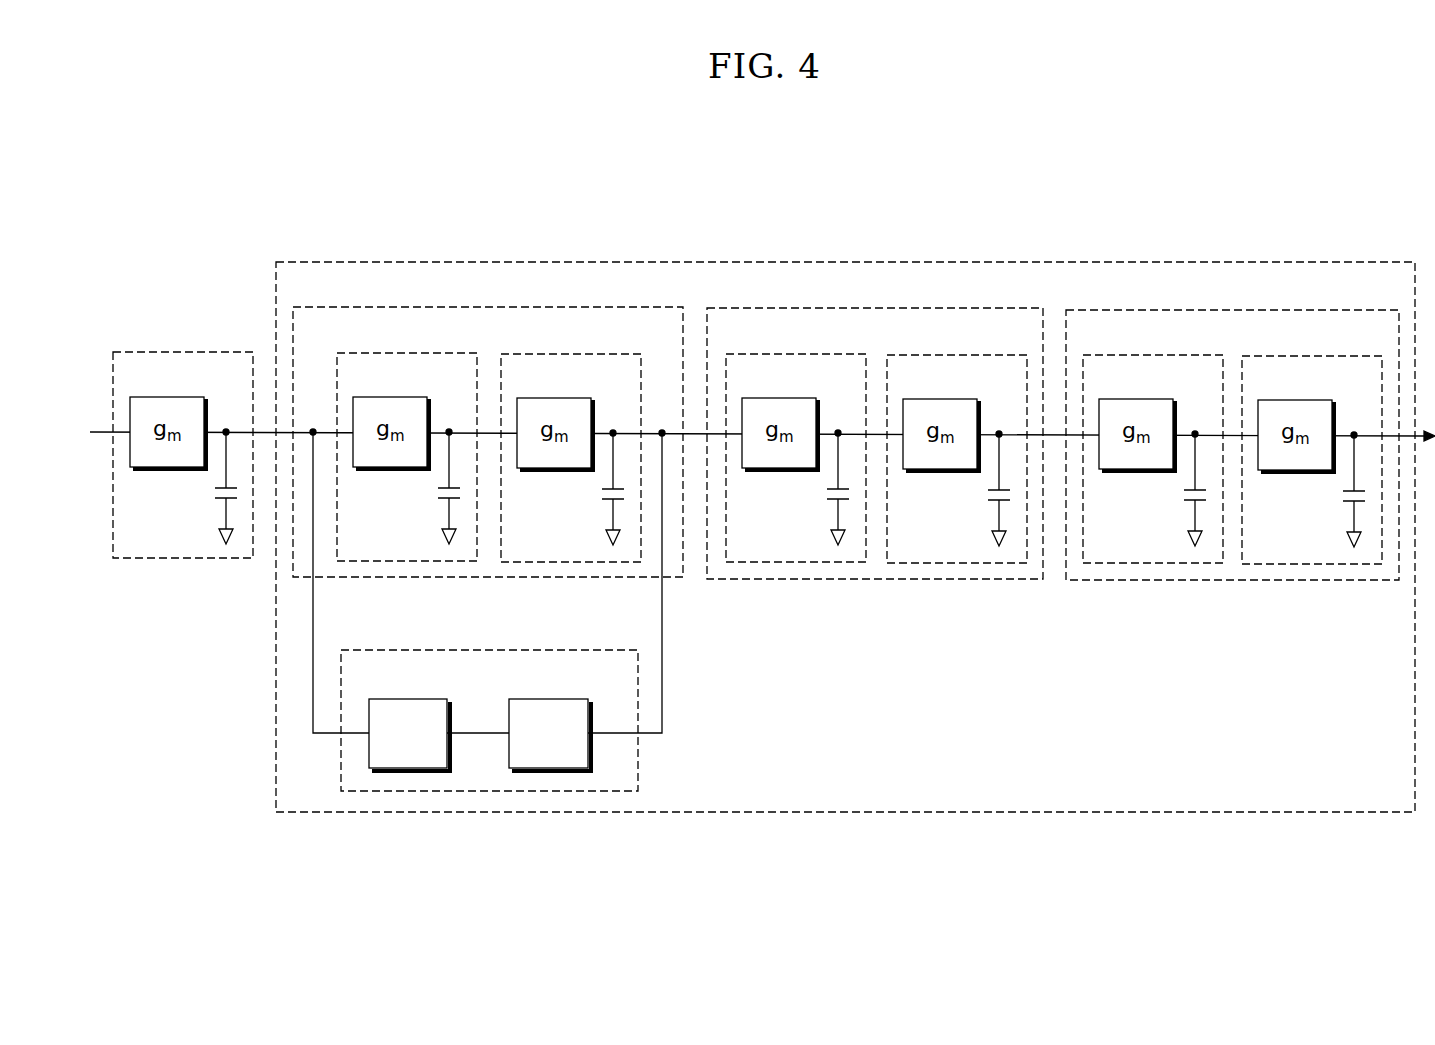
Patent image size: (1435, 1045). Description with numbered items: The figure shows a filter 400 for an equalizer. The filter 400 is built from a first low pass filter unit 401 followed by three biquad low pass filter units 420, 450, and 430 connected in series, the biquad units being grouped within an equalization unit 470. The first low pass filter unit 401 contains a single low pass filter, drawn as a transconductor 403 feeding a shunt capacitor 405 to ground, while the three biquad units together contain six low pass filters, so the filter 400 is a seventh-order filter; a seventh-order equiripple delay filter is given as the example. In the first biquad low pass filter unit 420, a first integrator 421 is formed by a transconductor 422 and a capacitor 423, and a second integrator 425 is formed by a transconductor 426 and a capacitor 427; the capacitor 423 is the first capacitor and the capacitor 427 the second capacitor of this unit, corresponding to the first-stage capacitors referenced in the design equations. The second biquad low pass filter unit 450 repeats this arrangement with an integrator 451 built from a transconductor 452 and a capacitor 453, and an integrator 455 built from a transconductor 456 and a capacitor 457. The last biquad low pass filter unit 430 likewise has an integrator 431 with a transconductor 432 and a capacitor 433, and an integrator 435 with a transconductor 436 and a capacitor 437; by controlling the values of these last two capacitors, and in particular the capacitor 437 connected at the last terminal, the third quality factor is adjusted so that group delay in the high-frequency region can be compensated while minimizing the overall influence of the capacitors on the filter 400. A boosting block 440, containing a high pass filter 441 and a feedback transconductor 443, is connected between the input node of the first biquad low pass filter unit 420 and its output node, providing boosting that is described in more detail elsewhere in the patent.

The filter 400 is at (1227, 215).
The first low pass filter unit 401 is at (183, 439).
The transconductor 403 is at (181, 419).
The capacitor C1 405 is at (186, 487).
The equalization unit 470 is at (877, 263).
The first biquad low pass filter unit 420 is at (490, 307).
The first integrator 421 is at (407, 442).
The transconductor 422 is at (404, 419).
The capacitor 423 is at (409, 487).
The second integrator 425 is at (571, 443).
The transconductor 426 is at (568, 420).
The capacitor 427 is at (573, 488).
The biquad low pass filter unit 450 is at (880, 308).
The integrator 451 is at (796, 443).
The transconductor 452 is at (793, 420).
The capacitor C4 453 is at (798, 488).
The integrator 455 is at (957, 444).
The transconductor 456 is at (954, 421).
The capacitor C5 457 is at (959, 489).
The last biquad low pass filter unit 430 is at (1233, 310).
The integrator 431 is at (1153, 444).
The transconductor 432 is at (1150, 421).
The capacitor C6 433 is at (1155, 489).
The integrator 435 is at (1312, 445).
The transconductor 436 is at (1309, 422).
The capacitor C7 437 is at (1314, 490).
The boosting block 440 is at (485, 650).
The high pass filter 441 is at (410, 700).
The feedback transconductor 443 is at (553, 700).